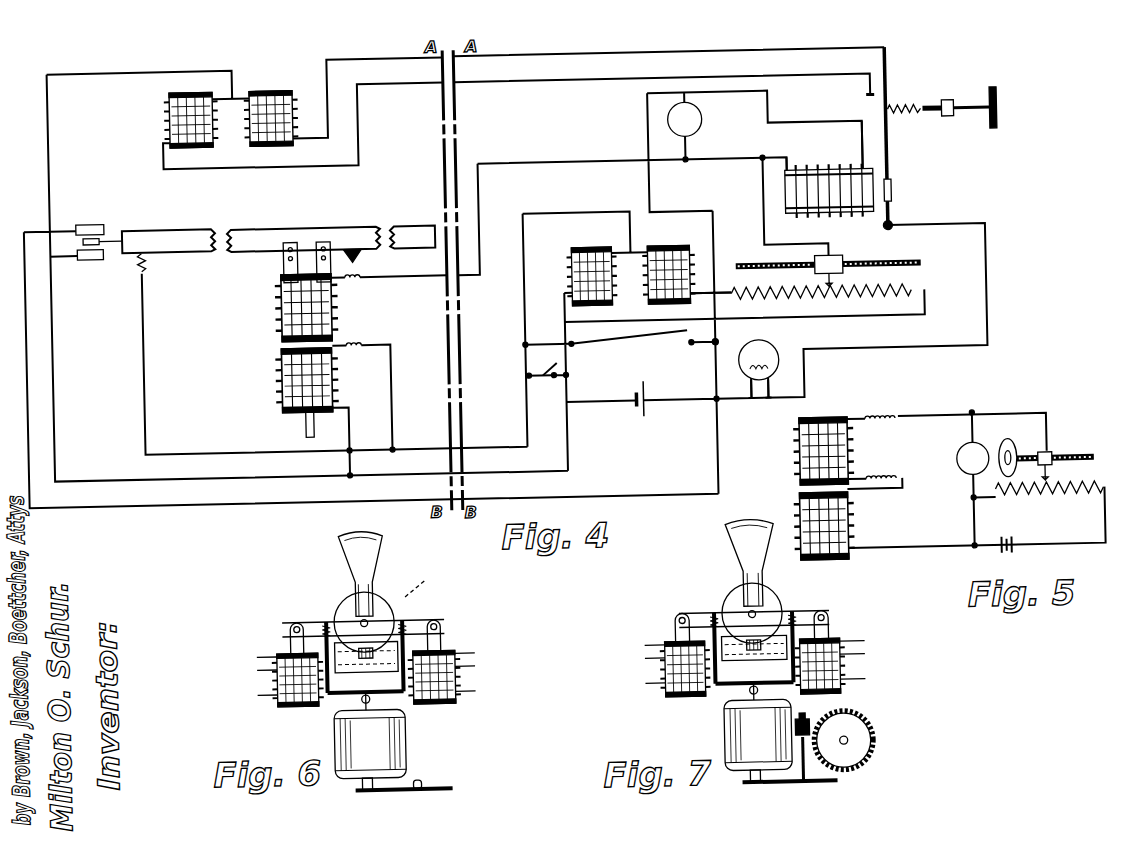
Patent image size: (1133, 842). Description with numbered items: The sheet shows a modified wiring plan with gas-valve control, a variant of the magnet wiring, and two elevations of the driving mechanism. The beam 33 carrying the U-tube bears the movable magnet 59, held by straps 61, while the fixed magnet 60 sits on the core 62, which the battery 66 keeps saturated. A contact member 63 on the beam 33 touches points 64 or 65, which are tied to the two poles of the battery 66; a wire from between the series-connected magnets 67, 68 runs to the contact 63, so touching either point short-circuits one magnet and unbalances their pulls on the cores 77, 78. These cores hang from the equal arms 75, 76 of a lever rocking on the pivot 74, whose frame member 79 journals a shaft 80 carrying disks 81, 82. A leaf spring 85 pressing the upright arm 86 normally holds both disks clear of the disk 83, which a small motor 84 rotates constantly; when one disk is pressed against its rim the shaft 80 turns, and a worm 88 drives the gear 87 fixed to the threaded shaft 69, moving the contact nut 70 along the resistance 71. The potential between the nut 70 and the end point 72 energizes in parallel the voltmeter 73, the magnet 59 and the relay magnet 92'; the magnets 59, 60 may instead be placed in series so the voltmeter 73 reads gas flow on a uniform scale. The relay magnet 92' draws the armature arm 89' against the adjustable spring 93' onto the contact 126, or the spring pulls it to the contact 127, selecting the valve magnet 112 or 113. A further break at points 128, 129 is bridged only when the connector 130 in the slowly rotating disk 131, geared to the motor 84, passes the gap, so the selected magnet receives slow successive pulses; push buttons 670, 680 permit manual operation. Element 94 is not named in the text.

In FIG. 4, the beam 33 is at (190, 222).
In FIG. 4, the movable electromagnet 59 is at (281, 296).
In FIG. 5, the movable electromagnet 59 is at (796, 452).
In FIG. 4, the fixed electromagnet 60 is at (280, 368).
In FIG. 5, the fixed electromagnet 60 is at (795, 507).
In FIG. 4, the straps 61 is at (322, 237).
In FIG. 4, the core 62 is at (303, 421).
In FIG. 4, the contact member 63 is at (103, 229).
In FIG. 4, the contact point 64 is at (88, 215).
In FIG. 4, the contact point 65 is at (88, 250).
In FIG. 4, the battery 66 is at (637, 409).
In FIG. 5, the battery 66 is at (1008, 553).
In FIG. 4, the electromagnet 67 is at (572, 252).
In FIG. 6, the electromagnet 67 is at (264, 667).
In FIG. 7, the electromagnet 67 is at (652, 673).
In FIG. 4, the electromagnet 68 is at (689, 252).
In FIG. 6, the electromagnet 68 is at (452, 667).
In FIG. 4, the threaded shaft 69 is at (750, 266).
In FIG. 5, the threaded shaft 69 is at (1062, 465).
In FIG. 4, the contact-carrying nut 70 is at (840, 262).
In FIG. 4, the resistance 71 is at (858, 298).
In FIG. 5, the resistance 71 is at (1050, 501).
In FIG. 4, the end point of resistance 72 is at (710, 297).
In FIG. 4, the volt-meter 73 is at (705, 122).
In FIG. 5, the volt-meter 73 is at (954, 461).
In FIG. 6, the pivot 74 is at (361, 613).
In FIG. 6, the lever arm 75 is at (288, 618).
In FIG. 7, the lever arm 75 is at (675, 617).
In FIG. 6, the lever arm 76 is at (432, 619).
In FIG. 7, the lever arm 76 is at (822, 618).
In FIG. 6, the core member 77 is at (282, 632).
In FIG. 7, the core member 77 is at (668, 632).
In FIG. 6, the core member 78 is at (434, 632).
In FIG. 7, the core member 78 is at (822, 633).
In FIG. 6, the frame member 79 is at (340, 598).
In FIG. 7, the frame member 79 is at (728, 600).
In FIG. 6, the shaft 80 is at (348, 668).
In FIG. 7, the shaft 80 is at (735, 664).
In FIG. 6, the disk 81 is at (318, 619).
In FIG. 7, the disk 81 is at (707, 618).
In FIG. 6, the disk 82 is at (398, 619).
In FIG. 7, the disk 82 is at (786, 618).
In FIG. 6, the rotating disk 83 is at (335, 689).
In FIG. 7, the rotating disk 83 is at (722, 688).
In FIG. 6, the electric motor 84 is at (396, 738).
In FIG. 7, the electric motor 84 is at (715, 728).
In FIG. 6, the leaf spring 85 is at (335, 537).
In FIG. 7, the leaf spring 85 is at (727, 529).
In FIG. 6, the upright arm 86 is at (366, 568).
In FIG. 7, the upright arm 86 is at (745, 565).
In FIG. 5, the gear 87 is at (1008, 450).
In FIG. 6, the gear 87 is at (423, 580).
In FIG. 6, the worm 88 is at (372, 668).
In FIG. 7, the worm 88 is at (762, 664).
In FIG. 4, the armature arm 89' is at (907, 138).
In FIG. 4, the relay magnet 92' is at (804, 169).
In FIG. 4, the adjustable spring 93' is at (945, 122).
In FIG. 4, the knob 94 is at (993, 108).
In FIG. 4, the electromagnet 112 is at (172, 108).
In FIG. 4, the electromagnet 113 is at (270, 88).
In FIG. 4, the contact point 126 is at (872, 100).
In FIG. 4, the contact point 127 is at (902, 112).
In FIG. 4, the contact point 128 is at (749, 392).
In FIG. 4, the contact point 129 is at (768, 392).
In FIG. 4, the metal connector 130 is at (772, 356).
In FIG. 4, the rotating disk 131 is at (716, 346).
In FIG. 7, the rotating disk 131 is at (861, 748).
In FIG. 4, the push button 670 is at (686, 338).
In FIG. 4, the push button 680 is at (544, 388).